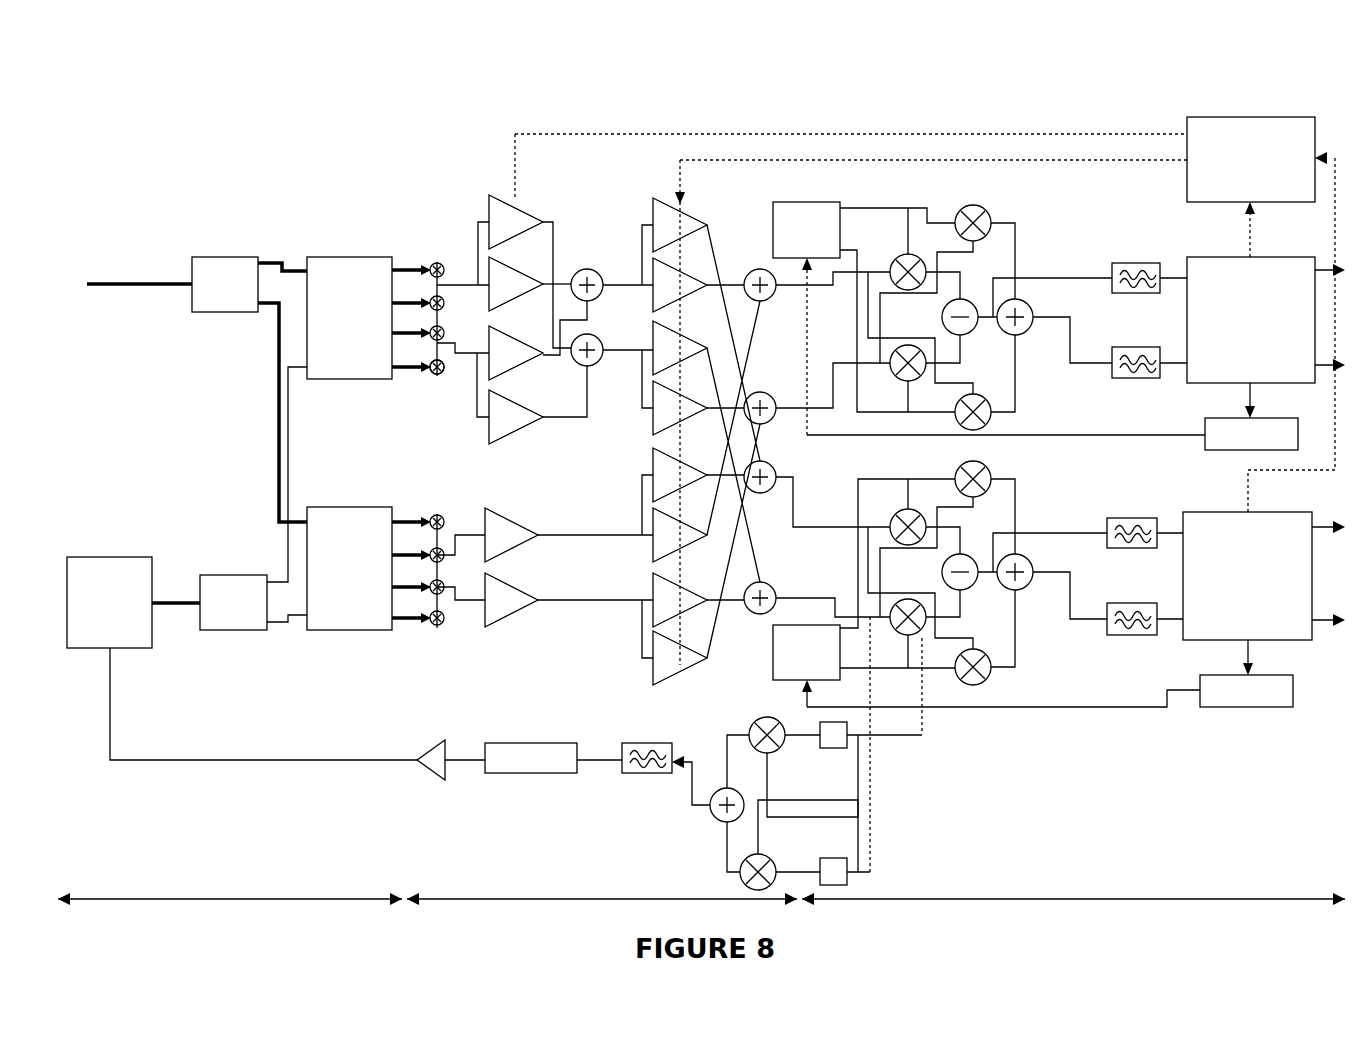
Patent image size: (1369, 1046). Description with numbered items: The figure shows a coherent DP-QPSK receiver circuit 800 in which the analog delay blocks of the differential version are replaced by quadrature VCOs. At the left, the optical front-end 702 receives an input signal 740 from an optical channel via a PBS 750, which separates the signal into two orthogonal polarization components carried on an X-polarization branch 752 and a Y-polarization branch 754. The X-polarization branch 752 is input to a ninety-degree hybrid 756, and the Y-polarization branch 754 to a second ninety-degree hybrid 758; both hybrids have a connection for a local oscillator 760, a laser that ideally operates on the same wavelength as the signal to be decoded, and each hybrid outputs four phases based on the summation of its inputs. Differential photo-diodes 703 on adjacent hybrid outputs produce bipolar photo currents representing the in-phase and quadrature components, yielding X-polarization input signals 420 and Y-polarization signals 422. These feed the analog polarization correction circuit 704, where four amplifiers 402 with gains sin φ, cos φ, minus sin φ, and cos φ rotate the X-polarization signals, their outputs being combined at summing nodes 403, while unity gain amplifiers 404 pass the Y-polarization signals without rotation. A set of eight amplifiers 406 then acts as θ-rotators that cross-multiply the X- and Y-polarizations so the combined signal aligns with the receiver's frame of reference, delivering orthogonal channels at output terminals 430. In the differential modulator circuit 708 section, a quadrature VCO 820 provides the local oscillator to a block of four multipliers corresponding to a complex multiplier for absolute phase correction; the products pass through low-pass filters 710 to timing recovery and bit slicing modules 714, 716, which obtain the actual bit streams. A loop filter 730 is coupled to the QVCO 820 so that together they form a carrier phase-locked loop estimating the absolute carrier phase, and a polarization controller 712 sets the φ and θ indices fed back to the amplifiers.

The receiver circuit 800 is at (705, 464).
The input signal 740 is at (131, 212).
The PBS 750 is at (222, 257).
The X-polarization branch 752 is at (281, 257).
The Y-polarization branch 754 is at (265, 305).
The 90°-hybrid 756 is at (350, 257).
The 90°-hybrid 758 is at (350, 507).
The local oscillator 760 is at (110, 557).
The X-polarization input signals 420 is at (455, 255).
The Y-polarization signals 422 is at (468, 627).
The photo-diodes 703 is at (437, 378).
The amplifiers 402 is at (523, 210).
The summing nodes 403 is at (520, 272).
The unity gain amplifiers 404 is at (507, 520).
The amplifiers 406 is at (667, 205).
The quadrature VCO 820 is at (773, 210).
The output terminals 430 is at (853, 527).
The low-pass filters 710 is at (1135, 263).
The polarization controller 712 is at (1250, 117).
The timing recovery and bit slicing module 714 is at (1205, 383).
The timing recovery and bit slicing module 716 is at (1300, 512).
The loop filter 730 is at (1218, 707).
The optical front-end 702 is at (230, 912).
The analog polarization correction circuit 704 is at (602, 912).
The differential modulator circuit 708 is at (1073, 912).